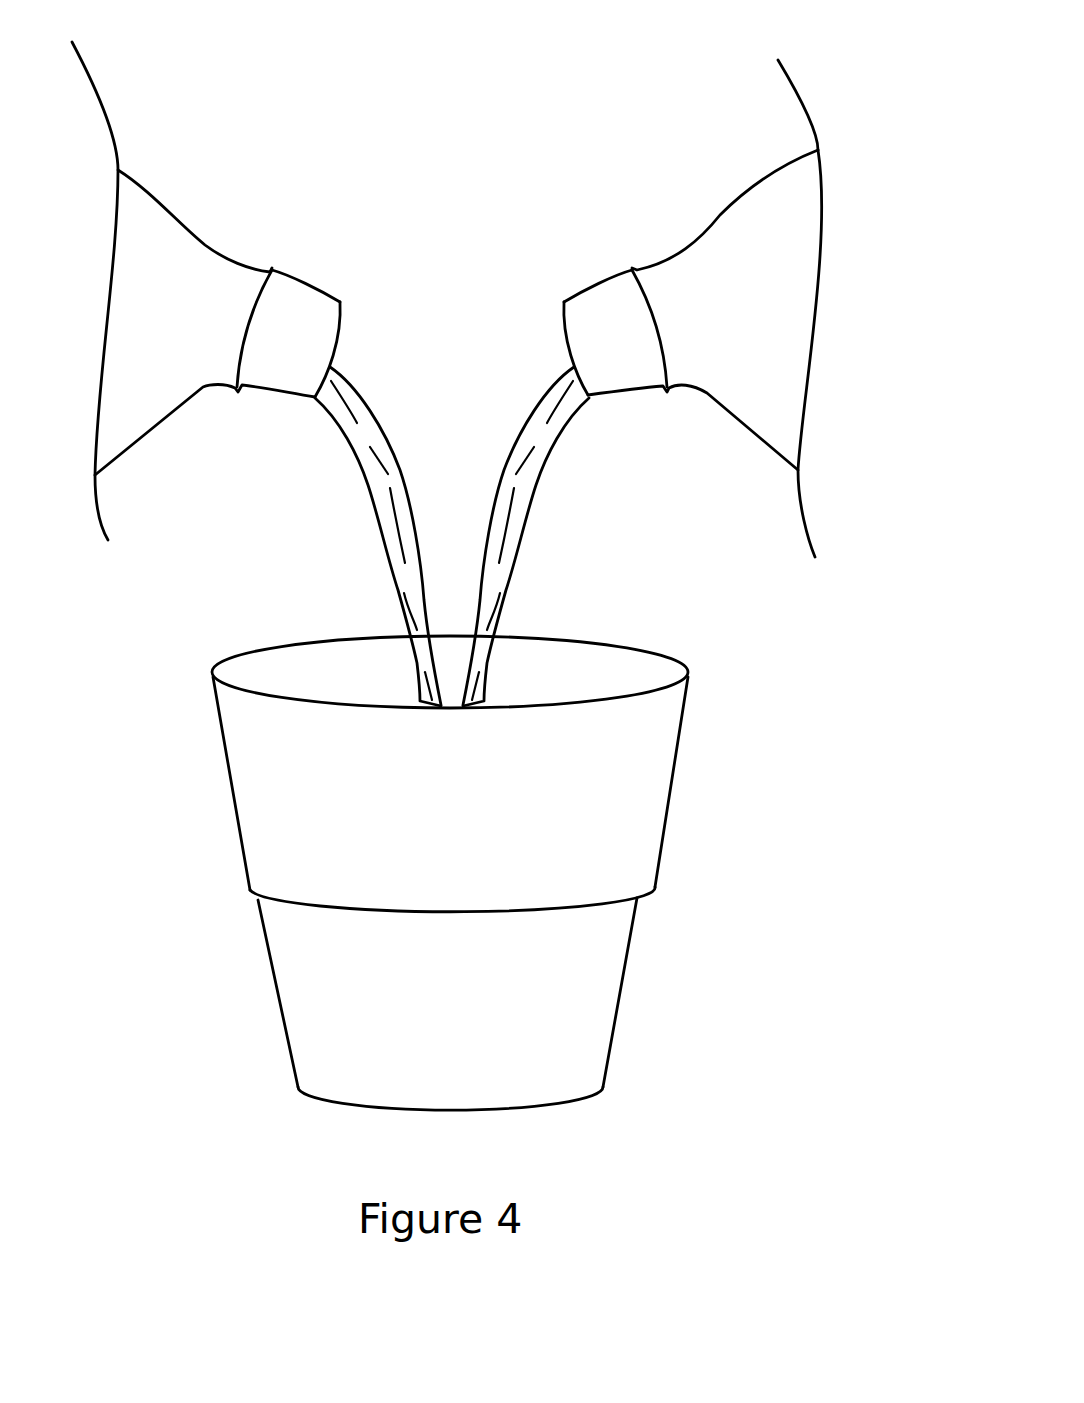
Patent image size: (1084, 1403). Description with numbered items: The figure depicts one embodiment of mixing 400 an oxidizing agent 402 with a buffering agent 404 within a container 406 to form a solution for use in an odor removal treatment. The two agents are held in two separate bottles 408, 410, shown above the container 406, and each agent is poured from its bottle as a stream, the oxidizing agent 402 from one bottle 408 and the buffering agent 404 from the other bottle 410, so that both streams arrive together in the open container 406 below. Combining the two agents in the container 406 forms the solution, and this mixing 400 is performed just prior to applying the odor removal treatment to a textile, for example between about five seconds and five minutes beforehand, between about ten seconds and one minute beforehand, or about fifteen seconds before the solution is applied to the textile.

The mixing 400 is at (256, 88).
The oxidizing agent 402 is at (375, 418).
The buffering agent 404 is at (528, 427).
The container 406 is at (260, 647).
The bottle 408 is at (211, 342).
The bottle 410 is at (732, 341).